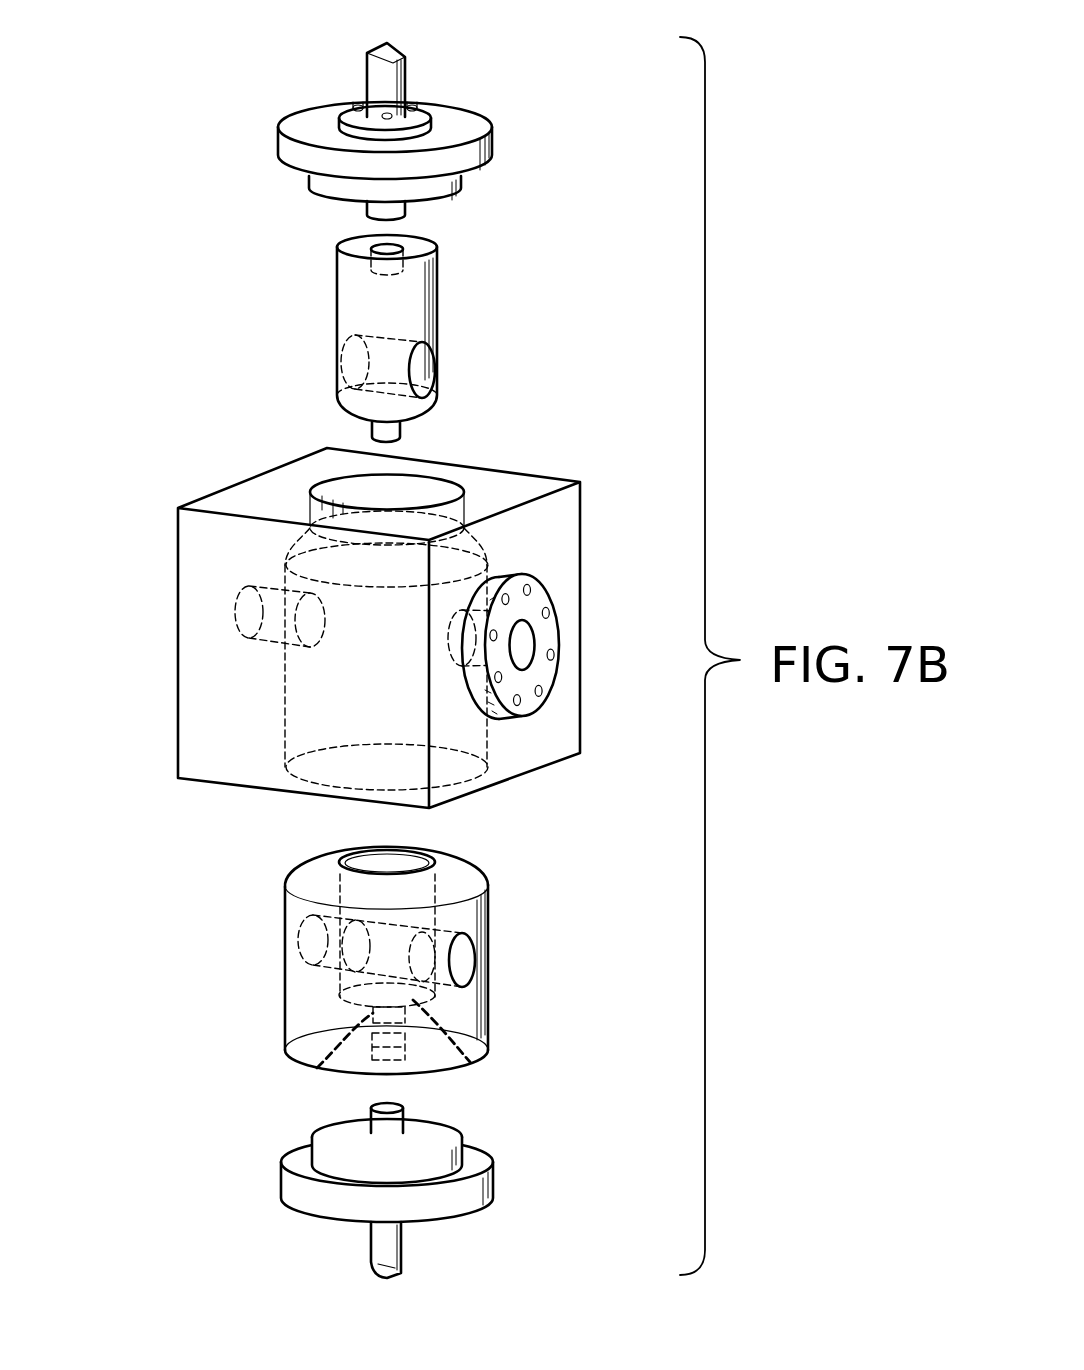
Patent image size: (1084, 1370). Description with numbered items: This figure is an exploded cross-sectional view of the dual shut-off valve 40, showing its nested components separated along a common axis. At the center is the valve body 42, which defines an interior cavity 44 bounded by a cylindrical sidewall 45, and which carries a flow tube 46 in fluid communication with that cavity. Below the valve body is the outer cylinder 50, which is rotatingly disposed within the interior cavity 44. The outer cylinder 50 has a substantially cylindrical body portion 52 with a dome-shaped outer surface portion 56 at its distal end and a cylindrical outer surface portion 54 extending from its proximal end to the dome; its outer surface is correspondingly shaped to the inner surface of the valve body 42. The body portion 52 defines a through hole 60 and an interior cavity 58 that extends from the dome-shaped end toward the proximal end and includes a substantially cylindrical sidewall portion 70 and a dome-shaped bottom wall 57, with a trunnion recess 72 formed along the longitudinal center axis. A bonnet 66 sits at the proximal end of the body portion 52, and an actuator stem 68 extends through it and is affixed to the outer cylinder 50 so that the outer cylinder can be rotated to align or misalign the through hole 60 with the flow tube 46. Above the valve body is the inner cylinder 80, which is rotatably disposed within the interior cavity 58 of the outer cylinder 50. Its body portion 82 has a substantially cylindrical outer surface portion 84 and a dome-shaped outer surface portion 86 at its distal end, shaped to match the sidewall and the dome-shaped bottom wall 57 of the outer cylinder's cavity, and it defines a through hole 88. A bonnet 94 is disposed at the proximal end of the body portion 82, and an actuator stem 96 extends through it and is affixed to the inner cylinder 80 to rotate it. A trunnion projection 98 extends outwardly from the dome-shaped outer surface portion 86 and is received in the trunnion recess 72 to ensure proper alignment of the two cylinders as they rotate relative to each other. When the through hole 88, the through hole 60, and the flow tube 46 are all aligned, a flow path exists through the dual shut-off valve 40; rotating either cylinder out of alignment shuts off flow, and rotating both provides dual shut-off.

The dual shut-off valve 40 is at (198, 426).
The valve body 42 is at (156, 622).
The interior cavity 44 is at (407, 495).
The cylindrical sidewall 45 is at (285, 688).
The flow tube 46 is at (525, 647).
The outer cylinder 50 is at (181, 945).
The body portion 52 is at (273, 1004).
The cylindrical outer surface portion 54 is at (468, 1012).
The dome-shaped outer surface portion 56 is at (315, 880).
The dome-shaped bottom wall 57 is at (467, 1060).
The interior cavity 58 is at (404, 865).
The through hole 60 is at (467, 962).
The bonnet 66 is at (489, 1185).
The actuator stem 68 is at (382, 1255).
The cylindrical sidewall portion 70 is at (434, 880).
The trunnion recess 72 is at (317, 1068).
The inner cylinder 80 is at (270, 262).
The body portion 82 is at (323, 318).
The cylindrical outer surface portion 84 is at (418, 300).
The dome-shaped outer surface portion 86 is at (367, 411).
The through hole 88 is at (425, 371).
The bonnet 94 is at (468, 122).
The actuator stem 96 is at (367, 72).
The trunnion projection 98 is at (400, 432).